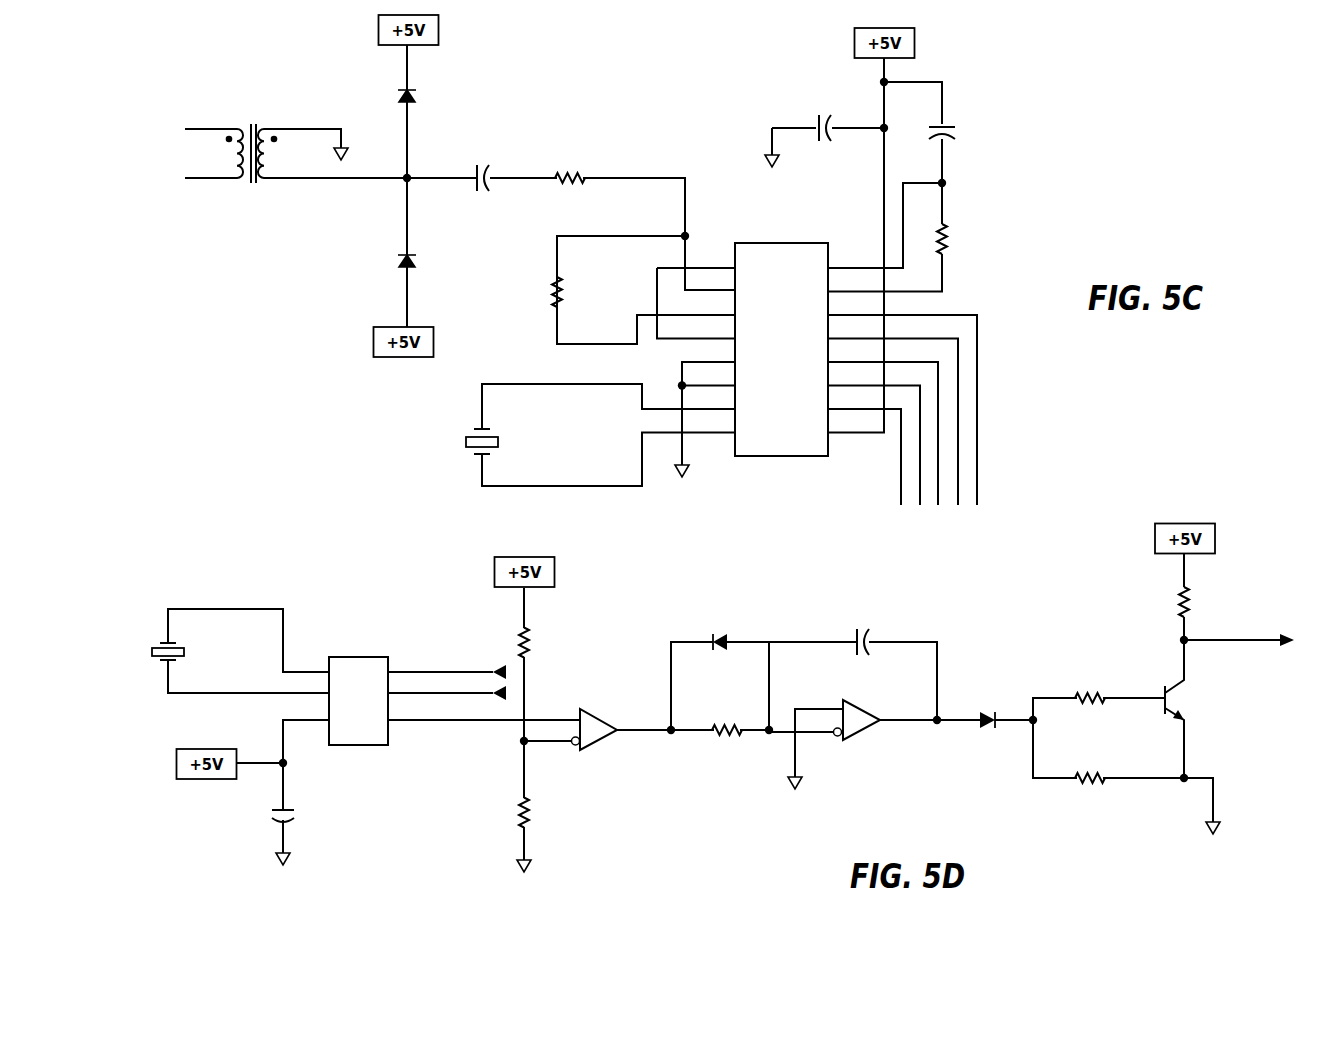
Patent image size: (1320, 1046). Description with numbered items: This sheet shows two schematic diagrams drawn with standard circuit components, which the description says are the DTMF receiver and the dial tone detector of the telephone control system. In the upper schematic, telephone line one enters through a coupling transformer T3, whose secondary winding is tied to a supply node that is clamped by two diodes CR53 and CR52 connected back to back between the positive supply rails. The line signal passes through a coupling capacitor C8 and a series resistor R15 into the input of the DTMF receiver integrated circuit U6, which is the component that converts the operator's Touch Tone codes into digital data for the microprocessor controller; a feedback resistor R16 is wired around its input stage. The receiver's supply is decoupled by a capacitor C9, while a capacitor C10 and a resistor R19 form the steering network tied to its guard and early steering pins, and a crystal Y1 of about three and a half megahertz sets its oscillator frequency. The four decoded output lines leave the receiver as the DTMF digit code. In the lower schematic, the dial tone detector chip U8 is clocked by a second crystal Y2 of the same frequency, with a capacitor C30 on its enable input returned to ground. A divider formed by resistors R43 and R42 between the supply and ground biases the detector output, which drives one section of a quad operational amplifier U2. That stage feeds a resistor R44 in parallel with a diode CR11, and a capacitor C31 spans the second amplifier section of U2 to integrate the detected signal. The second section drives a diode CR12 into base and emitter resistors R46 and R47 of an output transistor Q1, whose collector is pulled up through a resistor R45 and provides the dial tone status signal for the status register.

In FIG. 5C, the telephone line coupling transformer T3 is at (253, 156).
In FIG. 5C, the 1N4001 clamp diode CR53 is at (423, 96).
In FIG. 5C, the 1N4001 clamp diode CR52 is at (419, 265).
In FIG. 5C, the 0.10 µF coupling capacitor C8 is at (482, 177).
In FIG. 5C, the 10K input resistor R15 is at (639, 220).
In FIG. 5C, the 150K feedback resistor R16 is at (643, 288).
In FIG. 5C, the MT8870 DTMF receiver U6 is at (817, 305).
In FIG. 5C, the 0.10 µF bypass capacitor C9 is at (840, 97).
In FIG. 5C, the 0.10 µF steering capacitor C10 is at (945, 132).
In FIG. 5C, the 300K steering resistor R19 is at (906, 237).
In FIG. 5C, the 3.58 MHz crystal Y1 is at (600, 435).
In FIG. 5D, the 3.58 MHz crystal Y2 is at (240, 651).
In FIG. 5D, the M980 dial tone detector chip U8 is at (431, 678).
In FIG. 5D, the 1.00 µF capacitor C30 is at (263, 808).
In FIG. 5D, the 10K pull-up resistor R43 is at (528, 649).
In FIG. 5D, the 10K pull-down resistor R42 is at (538, 806).
In FIG. 5D, the TL084 operational amplifier U2 is at (730, 738).
In FIG. 5D, the 100K resistor R44 is at (720, 733).
In FIG. 5D, the 1N914 diode CR11 is at (720, 669).
In FIG. 5D, the 1.00 µF capacitor C31 is at (855, 666).
In FIG. 5D, the 1N914 diode CR12 is at (987, 722).
In FIG. 5D, the 10.0K base resistor R46 is at (1099, 699).
In FIG. 5D, the 10.0K resistor R47 is at (1133, 778).
In FIG. 5D, the 4.7K collector resistor R45 is at (1236, 588).
In FIG. 5D, the output transistor Q1 is at (1178, 709).